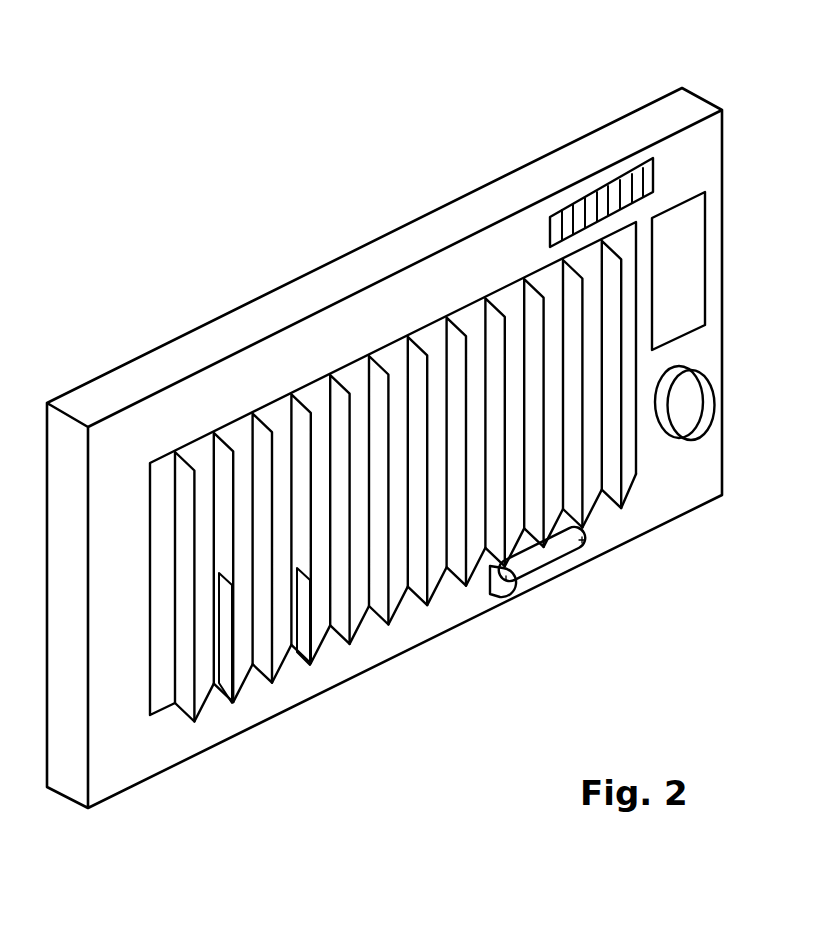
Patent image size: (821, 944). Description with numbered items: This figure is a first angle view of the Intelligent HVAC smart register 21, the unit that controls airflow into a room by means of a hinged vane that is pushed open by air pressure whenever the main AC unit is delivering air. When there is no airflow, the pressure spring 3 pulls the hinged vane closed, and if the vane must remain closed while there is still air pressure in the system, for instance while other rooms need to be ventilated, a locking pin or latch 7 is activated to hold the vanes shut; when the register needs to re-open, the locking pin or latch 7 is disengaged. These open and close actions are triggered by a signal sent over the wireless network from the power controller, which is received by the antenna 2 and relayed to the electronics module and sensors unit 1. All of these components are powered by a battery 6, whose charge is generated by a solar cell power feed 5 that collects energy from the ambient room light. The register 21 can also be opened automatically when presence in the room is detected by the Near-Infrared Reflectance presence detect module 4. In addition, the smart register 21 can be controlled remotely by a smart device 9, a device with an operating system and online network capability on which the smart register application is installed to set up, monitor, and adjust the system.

The Intelligent HVAC smart register 21 is at (692, 155).
The antenna 2 is at (570, 202).
The electronics module and sensors unit 1 is at (685, 295).
The smart device 9 is at (300, 490).
The pressure spring 3 is at (633, 358).
The Near-Infrared Reflectance (NIR) presence detect module 4 is at (693, 425).
The battery 6 is at (523, 565).
The solar cell power feed 5 is at (223, 673).
The locking pin or latch 7 is at (303, 638).